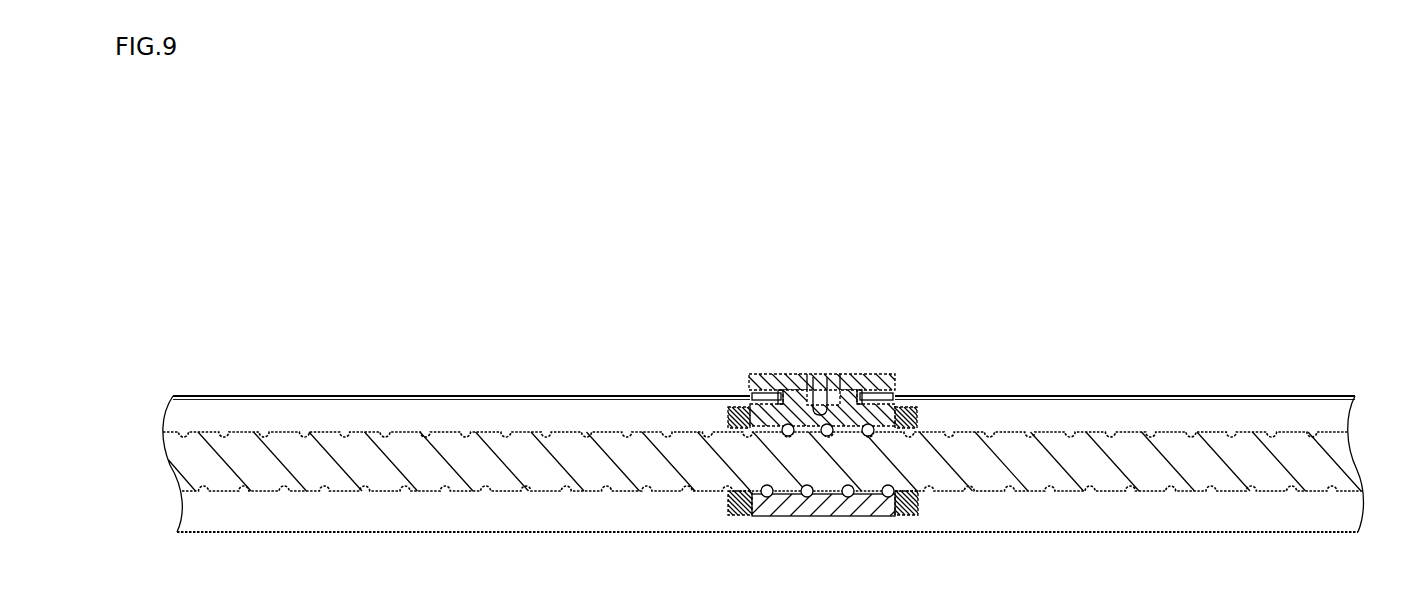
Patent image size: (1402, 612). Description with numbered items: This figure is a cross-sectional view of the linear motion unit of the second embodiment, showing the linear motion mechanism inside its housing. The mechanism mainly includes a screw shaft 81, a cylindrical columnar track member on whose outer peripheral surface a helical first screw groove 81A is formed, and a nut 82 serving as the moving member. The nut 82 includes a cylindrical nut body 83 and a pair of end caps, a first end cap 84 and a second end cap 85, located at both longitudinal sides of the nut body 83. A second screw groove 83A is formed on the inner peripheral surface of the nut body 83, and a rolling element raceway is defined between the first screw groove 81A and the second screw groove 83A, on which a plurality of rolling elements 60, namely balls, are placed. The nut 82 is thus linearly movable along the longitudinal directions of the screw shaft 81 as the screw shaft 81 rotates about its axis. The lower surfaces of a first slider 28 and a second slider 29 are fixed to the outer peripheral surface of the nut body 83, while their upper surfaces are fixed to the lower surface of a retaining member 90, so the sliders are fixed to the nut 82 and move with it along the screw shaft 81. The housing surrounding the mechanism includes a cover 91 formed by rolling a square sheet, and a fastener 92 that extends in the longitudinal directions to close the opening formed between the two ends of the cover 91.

The first slider 28 is at (826, 402).
The second slider 29 is at (793, 400).
The rolling elements 60 is at (786, 436).
The screw shaft 81 is at (1171, 443).
The first screw groove 81A is at (931, 488).
The nut 82 is at (892, 578).
The nut body 83 is at (824, 508).
The second screw groove 83A is at (750, 391).
The first end cap 84 is at (896, 510).
The second end cap 85 is at (742, 503).
The retaining member 90 is at (880, 382).
The cover 91 is at (1266, 534).
The fastener 92 is at (1266, 395).